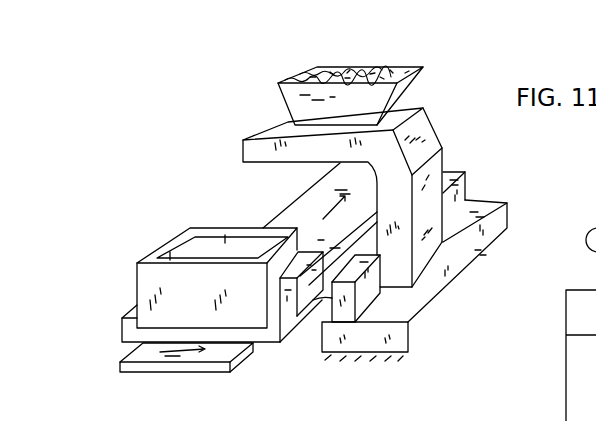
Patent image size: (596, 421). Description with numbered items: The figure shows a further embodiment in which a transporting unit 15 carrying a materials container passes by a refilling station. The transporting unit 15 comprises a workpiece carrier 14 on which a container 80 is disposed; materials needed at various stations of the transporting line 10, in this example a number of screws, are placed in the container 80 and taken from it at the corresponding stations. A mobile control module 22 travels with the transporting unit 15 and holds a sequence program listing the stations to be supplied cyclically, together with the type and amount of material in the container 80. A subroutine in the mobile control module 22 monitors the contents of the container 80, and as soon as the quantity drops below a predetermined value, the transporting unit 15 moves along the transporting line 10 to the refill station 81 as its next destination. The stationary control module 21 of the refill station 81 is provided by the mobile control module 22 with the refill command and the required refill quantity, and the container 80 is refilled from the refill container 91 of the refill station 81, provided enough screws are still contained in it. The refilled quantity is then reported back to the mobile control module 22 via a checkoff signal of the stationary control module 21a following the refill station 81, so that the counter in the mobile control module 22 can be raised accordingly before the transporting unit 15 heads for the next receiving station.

The refill container 91 is at (307, 70).
The refill station 81 is at (425, 135).
The transporting line 10 is at (313, 200).
The stationary control module 21a is at (465, 186).
The stationary control module 21 is at (305, 292).
The container 80 is at (177, 238).
The transporting unit 15 is at (108, 314).
The workpiece carrier 14 is at (258, 332).
The mobile control module 22 is at (290, 312).